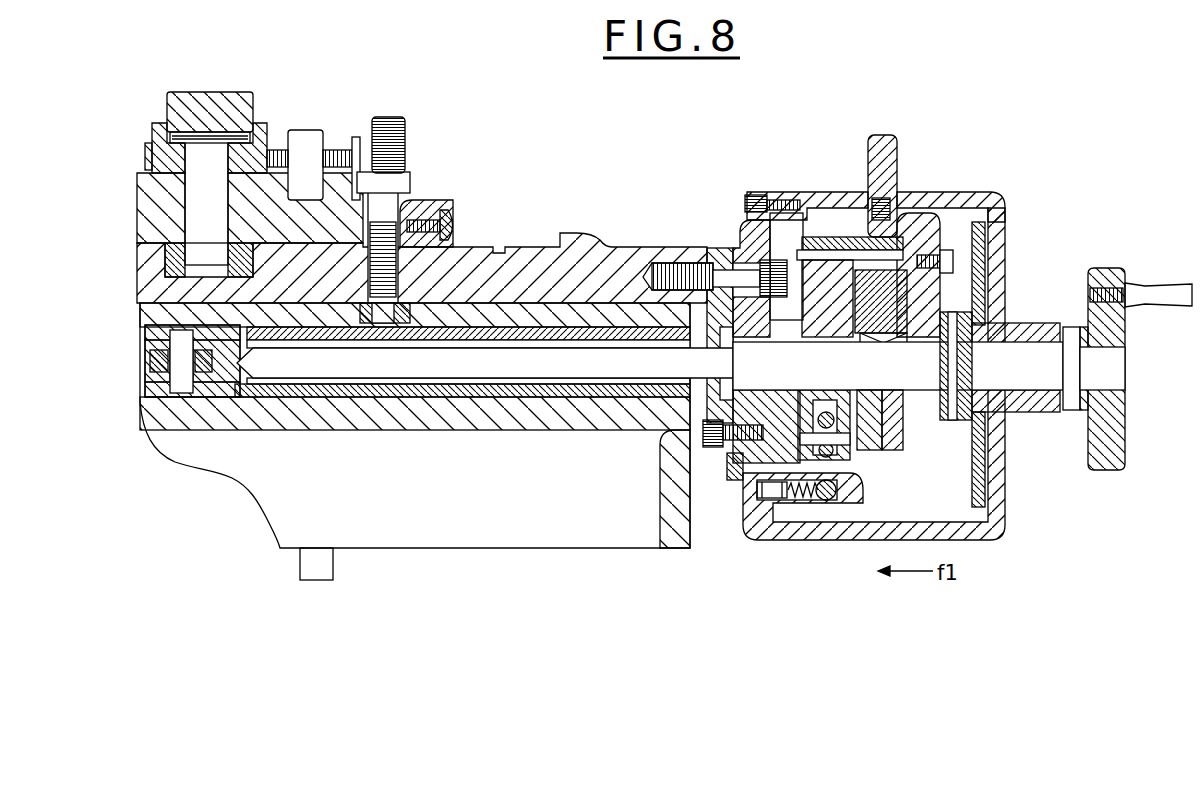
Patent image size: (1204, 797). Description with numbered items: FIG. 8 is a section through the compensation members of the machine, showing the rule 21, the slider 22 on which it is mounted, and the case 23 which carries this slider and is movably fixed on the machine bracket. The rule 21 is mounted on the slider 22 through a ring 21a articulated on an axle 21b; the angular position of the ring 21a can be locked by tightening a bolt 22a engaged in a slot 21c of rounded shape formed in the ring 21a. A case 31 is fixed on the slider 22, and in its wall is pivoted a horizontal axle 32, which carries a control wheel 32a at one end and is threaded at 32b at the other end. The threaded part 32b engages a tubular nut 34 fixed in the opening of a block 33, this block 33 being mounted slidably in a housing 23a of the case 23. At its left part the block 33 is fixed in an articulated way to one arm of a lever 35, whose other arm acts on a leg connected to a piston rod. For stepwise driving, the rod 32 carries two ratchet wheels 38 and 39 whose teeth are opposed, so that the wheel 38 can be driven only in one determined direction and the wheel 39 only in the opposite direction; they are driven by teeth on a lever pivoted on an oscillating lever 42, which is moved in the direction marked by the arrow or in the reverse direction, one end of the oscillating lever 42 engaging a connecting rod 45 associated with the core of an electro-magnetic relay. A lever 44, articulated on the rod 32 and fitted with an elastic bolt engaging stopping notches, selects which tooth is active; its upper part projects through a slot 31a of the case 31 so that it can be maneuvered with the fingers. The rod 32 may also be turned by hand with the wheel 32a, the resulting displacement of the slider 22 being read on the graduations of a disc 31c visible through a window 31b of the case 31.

The rule 21 is at (203, 108).
The ring 21a is at (432, 212).
The axle 21b is at (218, 152).
The slot 21c is at (452, 238).
The slider 22 is at (625, 265).
The bolt 22a is at (388, 205).
The case 23 is at (680, 545).
The housing 23a is at (398, 398).
The case 31 is at (815, 530).
The slot 31a is at (897, 205).
The window 31b is at (990, 262).
The disc 31c is at (975, 457).
The horizontal axle 32 is at (906, 366).
The control wheel 32a is at (1110, 455).
The threaded part 32b is at (475, 367).
The block 33 is at (322, 392).
The tubular nut 34 is at (565, 385).
The lever 35 is at (150, 357).
The ratchet wheel 38 is at (878, 437).
The ratchet wheel 39 is at (898, 437).
The oscillating lever 42 is at (822, 283).
The lever 44 is at (935, 225).
The connecting rod 45 is at (832, 470).